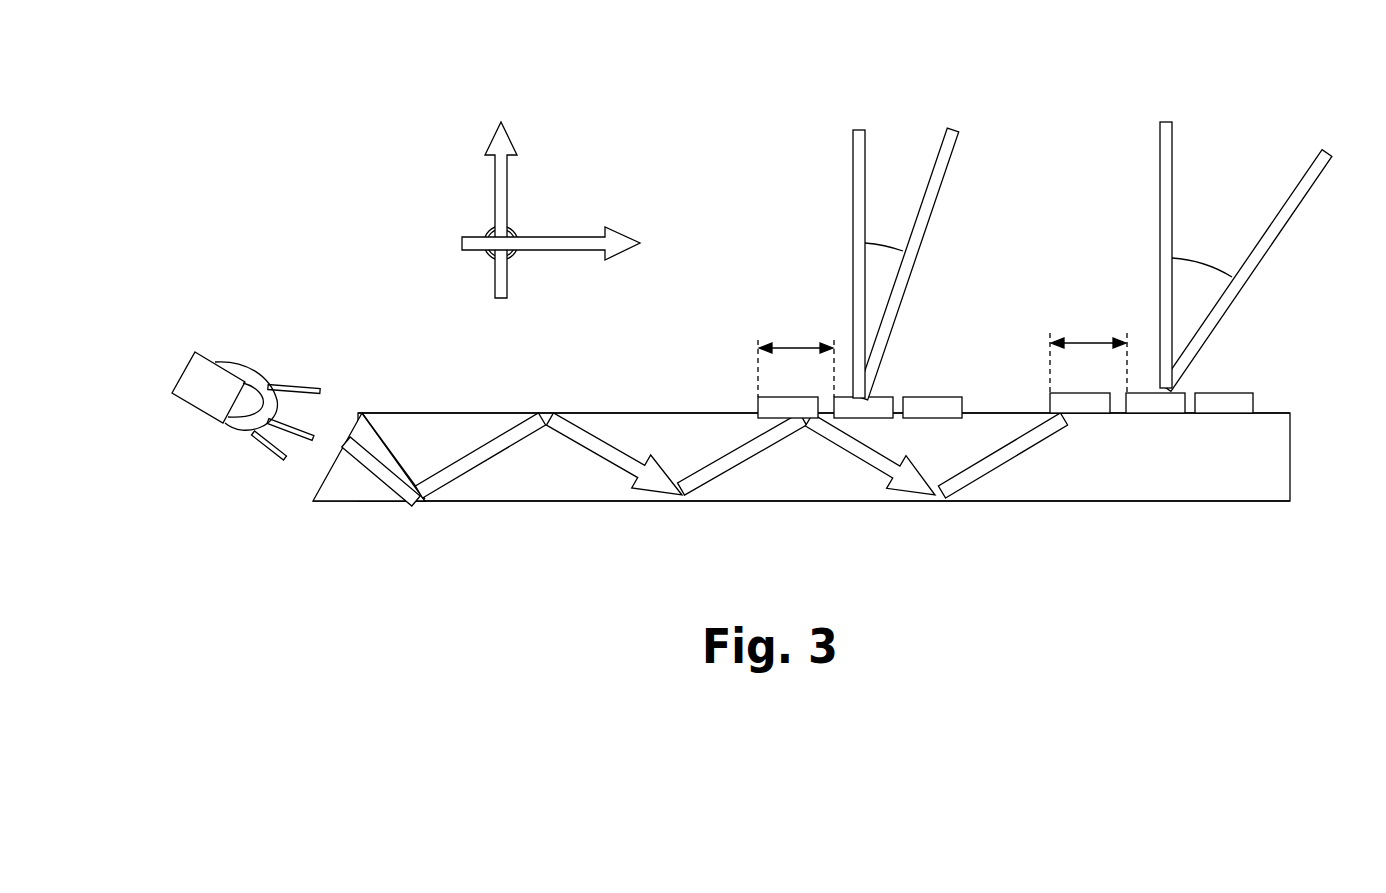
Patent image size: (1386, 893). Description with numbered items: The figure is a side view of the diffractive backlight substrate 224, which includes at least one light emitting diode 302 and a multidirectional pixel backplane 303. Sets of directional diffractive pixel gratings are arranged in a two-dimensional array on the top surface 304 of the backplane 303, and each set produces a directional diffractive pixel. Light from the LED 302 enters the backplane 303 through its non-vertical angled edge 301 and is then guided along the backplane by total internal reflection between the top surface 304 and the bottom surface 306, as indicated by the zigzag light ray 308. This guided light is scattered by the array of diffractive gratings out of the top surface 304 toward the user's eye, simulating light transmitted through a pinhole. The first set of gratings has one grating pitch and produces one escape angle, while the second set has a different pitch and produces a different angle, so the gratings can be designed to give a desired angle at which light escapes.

The diffractive backlight substrate 224 is at (538, 82).
The non-vertical angled edge 301 is at (328, 475).
The light emitting diode (LED) 302 is at (214, 358).
The multidirectional pixel backplane 303 is at (665, 410).
The top surface 304 is at (410, 413).
The bottom surface 306 is at (362, 503).
The light ray 308 is at (485, 460).